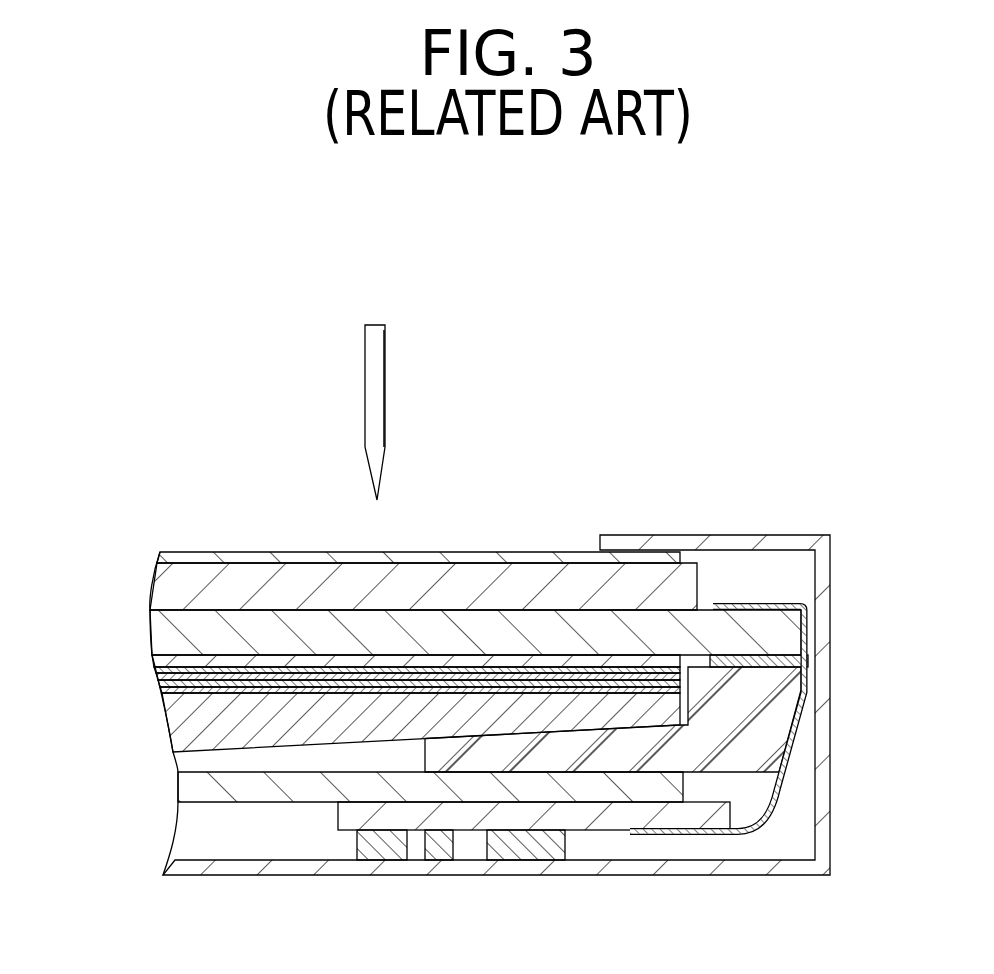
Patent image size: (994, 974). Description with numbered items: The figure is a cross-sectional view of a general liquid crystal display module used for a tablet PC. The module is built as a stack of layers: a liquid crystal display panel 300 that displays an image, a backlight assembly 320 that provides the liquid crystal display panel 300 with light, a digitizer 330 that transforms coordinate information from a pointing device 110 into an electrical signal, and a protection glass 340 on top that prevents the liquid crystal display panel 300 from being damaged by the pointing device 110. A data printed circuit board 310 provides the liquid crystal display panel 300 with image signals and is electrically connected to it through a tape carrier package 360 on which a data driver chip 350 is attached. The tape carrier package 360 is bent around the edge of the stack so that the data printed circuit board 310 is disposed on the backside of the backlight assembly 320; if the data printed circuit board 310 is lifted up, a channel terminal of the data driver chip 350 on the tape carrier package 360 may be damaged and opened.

The pointing device 110 is at (373, 410).
The liquid crystal display panel 300 is at (140, 602).
The data printed circuit board 310 is at (600, 815).
The backlight assembly 320 is at (140, 673).
The digitizer 330 is at (267, 790).
The protection glass 340 is at (504, 558).
The data driver chip 350 is at (792, 761).
The tape carrier package 360 is at (813, 733).